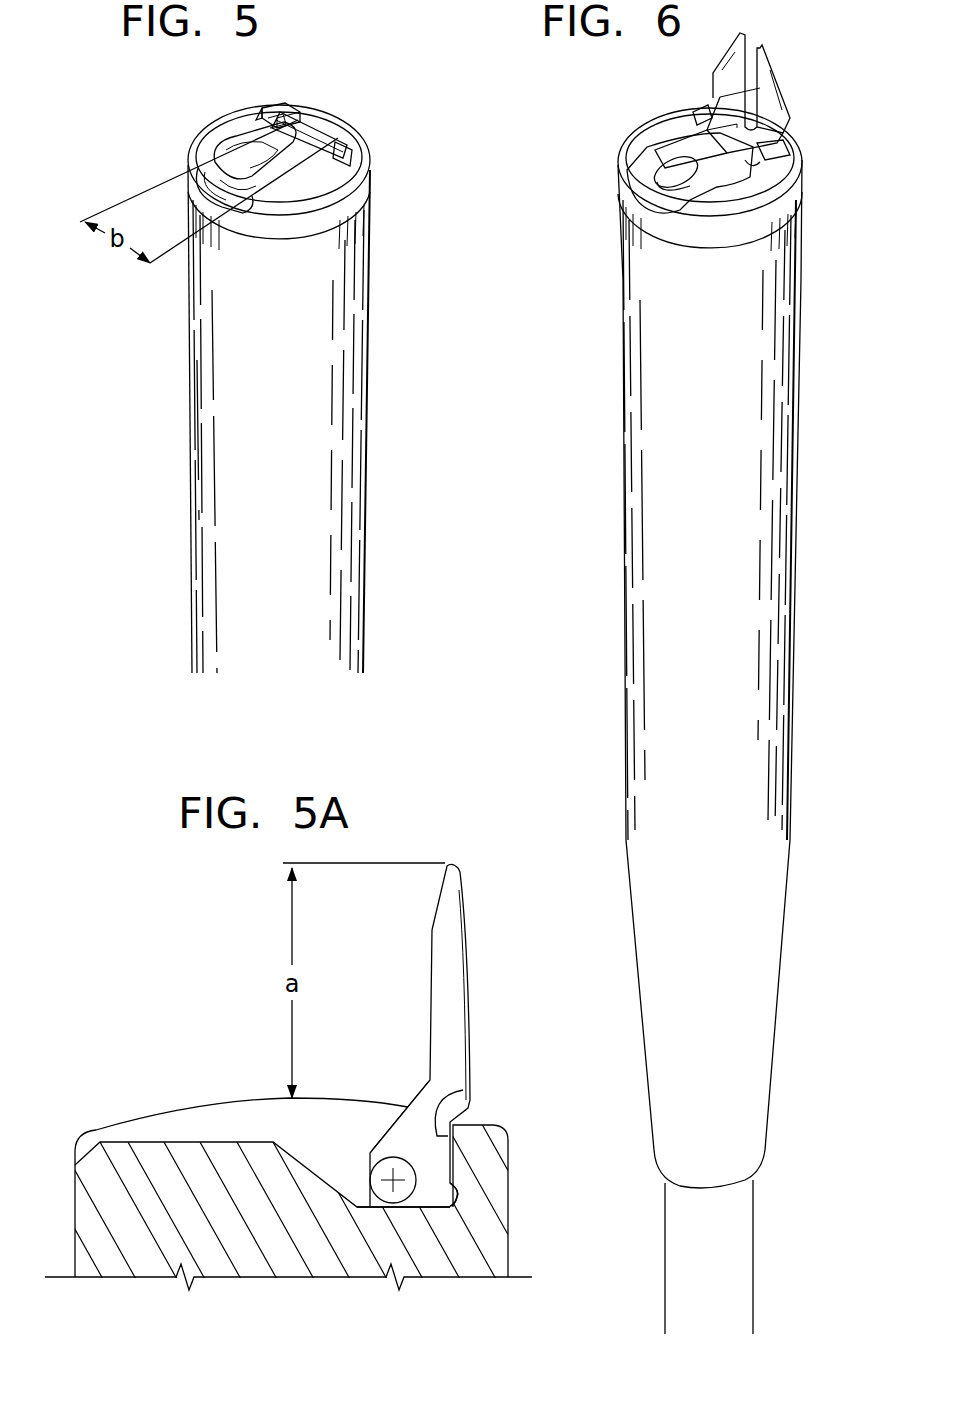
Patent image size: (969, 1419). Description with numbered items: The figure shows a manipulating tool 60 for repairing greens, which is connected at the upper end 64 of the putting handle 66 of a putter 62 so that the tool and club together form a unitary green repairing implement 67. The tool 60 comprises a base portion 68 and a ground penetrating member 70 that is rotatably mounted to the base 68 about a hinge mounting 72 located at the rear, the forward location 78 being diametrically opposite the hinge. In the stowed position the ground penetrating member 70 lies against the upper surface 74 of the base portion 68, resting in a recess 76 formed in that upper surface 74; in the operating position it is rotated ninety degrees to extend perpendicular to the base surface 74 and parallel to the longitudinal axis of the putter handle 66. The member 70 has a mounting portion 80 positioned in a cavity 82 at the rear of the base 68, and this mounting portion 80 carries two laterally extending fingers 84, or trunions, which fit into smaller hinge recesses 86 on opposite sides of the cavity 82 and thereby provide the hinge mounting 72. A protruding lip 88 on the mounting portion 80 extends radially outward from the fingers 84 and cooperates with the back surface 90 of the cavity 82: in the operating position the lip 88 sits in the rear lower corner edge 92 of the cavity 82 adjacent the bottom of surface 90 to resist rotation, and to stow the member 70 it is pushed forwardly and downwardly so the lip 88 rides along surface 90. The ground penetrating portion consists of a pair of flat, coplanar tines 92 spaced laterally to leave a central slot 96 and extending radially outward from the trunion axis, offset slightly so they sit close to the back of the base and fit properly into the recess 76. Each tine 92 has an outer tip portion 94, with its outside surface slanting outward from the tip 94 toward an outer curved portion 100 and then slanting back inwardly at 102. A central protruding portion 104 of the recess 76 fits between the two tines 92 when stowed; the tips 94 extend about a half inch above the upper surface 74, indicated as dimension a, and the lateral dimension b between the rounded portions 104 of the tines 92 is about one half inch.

In FIG. 5, the manipulating tool 60 is at (377, 112).
In FIG. 5, the putter 62 is at (185, 431).
In FIG. 5, the upper end 64 is at (340, 241).
In FIG. 5, the putting handle 66 is at (203, 362).
In FIG. 5, the unitary green repairing implement 67 is at (347, 92).
In FIG. 5, the base portion 68 is at (313, 180).
In FIG. 6, the base portion 68 is at (768, 218).
In FIG. 5, the ground penetrating member 70 is at (224, 150).
In FIG. 6, the ground penetrating member 70 is at (800, 97).
In FIG. 5A, the ground penetrating member 70 is at (473, 920).
In FIG. 5, the hinge mounting 72 is at (272, 115).
In FIG. 6, the hinge mounting 72 is at (777, 153).
In FIG. 5, the upper surface 74 is at (293, 195).
In FIG. 6, the upper surface 74 is at (745, 180).
In FIG. 5A, the upper surface 74 is at (205, 1105).
In FIG. 6, the recess 76 is at (653, 213).
In FIG. 6, the forward location 78 is at (657, 200).
In FIG. 6, the mounting portion 80 is at (757, 167).
In FIG. 5A, the mounting portion 80 is at (410, 1105).
In FIG. 5A, the cavity 82 is at (367, 1205).
In FIG. 5A, the fingers 84 is at (373, 1145).
In FIG. 5, the hinge recesses 86 is at (287, 118).
In FIG. 5A, the protruding lip 88 is at (460, 1187).
In FIG. 5A, the back surface 90 is at (462, 1090).
In FIG. 5, the tines 92 is at (256, 185).
In FIG. 6, the tines 92 is at (768, 62).
In FIG. 5A, the tines 92 is at (473, 960).
In FIG. 6, the outer tip portion 94 is at (758, 38).
In FIG. 6, the central slot 96 is at (753, 82).
In FIG. 6, the outer curved portion 100 is at (715, 64).
In FIG. 6, the inward slant 102 is at (717, 107).
In FIG. 5, the central protruding portion 104 is at (210, 170).
In FIG. 6, the central protruding portion 104 is at (667, 160).